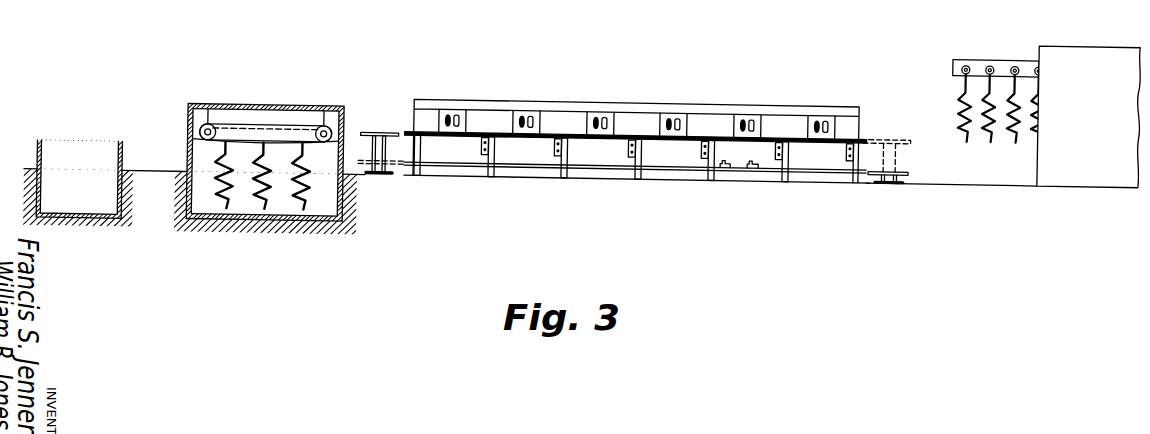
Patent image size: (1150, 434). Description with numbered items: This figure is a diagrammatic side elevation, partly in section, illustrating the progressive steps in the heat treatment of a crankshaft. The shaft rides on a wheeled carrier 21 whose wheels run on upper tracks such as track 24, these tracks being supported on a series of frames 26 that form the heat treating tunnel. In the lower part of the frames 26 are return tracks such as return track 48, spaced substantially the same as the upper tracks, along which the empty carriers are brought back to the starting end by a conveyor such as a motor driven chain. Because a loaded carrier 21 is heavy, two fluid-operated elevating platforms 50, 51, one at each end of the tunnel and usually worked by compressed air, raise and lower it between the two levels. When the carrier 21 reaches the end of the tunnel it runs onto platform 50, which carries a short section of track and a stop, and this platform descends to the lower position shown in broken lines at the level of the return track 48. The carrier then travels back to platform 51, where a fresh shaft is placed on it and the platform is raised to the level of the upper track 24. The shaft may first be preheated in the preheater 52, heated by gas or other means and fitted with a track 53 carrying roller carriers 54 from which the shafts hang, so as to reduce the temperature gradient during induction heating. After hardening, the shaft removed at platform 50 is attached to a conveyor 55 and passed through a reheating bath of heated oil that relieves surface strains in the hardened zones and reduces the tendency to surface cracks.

The carrier 21 is at (753, 157).
The track 24 is at (408, 127).
The frame 26 is at (623, 165).
The return track 48 is at (688, 163).
The elevating platform 50 is at (393, 122).
The elevating platform 51 is at (918, 146).
The preheater 52 is at (1100, 29).
The track 53 is at (1022, 45).
The roller carrier 54 is at (962, 63).
The conveyor 55 is at (281, 132).